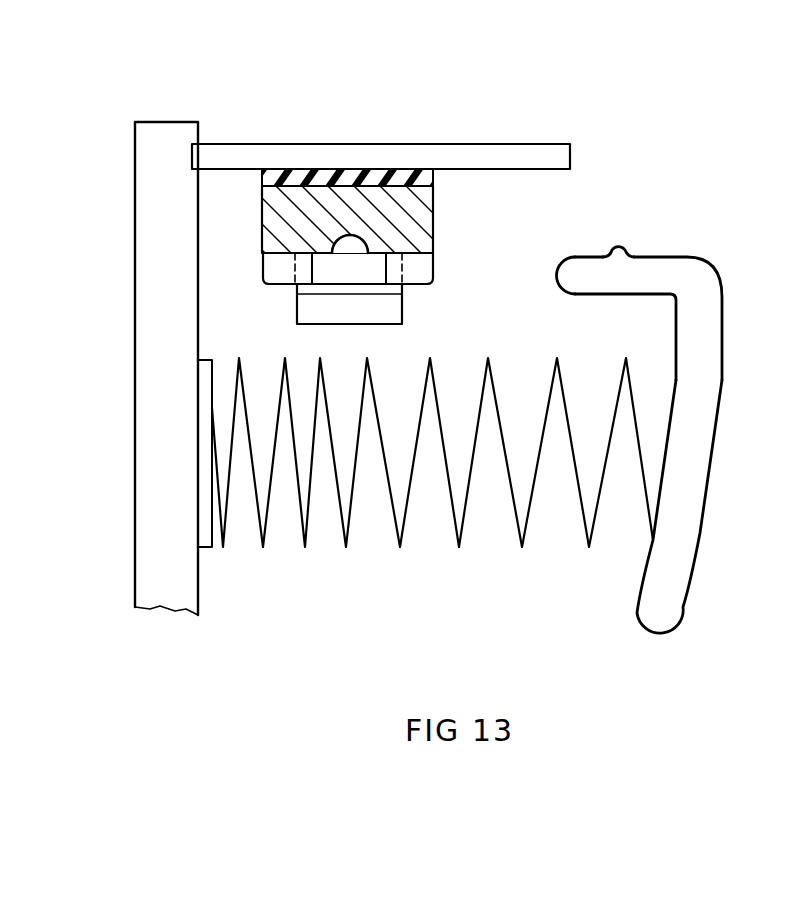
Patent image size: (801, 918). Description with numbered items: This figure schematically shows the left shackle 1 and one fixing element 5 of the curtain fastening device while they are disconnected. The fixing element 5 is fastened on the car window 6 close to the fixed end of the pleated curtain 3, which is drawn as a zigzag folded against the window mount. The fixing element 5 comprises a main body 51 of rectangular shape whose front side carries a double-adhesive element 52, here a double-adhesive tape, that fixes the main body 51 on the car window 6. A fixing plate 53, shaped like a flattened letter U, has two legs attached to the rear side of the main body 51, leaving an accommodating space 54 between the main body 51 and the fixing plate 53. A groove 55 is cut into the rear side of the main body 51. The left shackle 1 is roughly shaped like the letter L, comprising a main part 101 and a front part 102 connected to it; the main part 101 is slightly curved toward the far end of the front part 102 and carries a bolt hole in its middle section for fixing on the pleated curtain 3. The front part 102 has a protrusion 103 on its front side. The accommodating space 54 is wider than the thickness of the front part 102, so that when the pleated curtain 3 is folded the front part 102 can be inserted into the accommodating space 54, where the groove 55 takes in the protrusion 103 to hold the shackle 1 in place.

The left shackle 1 is at (679, 409).
The pleated curtain 3 is at (468, 497).
The fixing element 5 is at (217, 262).
The car window 6 is at (300, 153).
The main body 51 is at (410, 212).
The double-adhesive element 52 is at (402, 176).
The fixing plate 53 is at (382, 313).
The accommodating space 54 is at (362, 267).
The groove 55 is at (344, 250).
The main part 101 is at (670, 585).
The front part 102 is at (572, 268).
The protrusion 103 is at (621, 250).